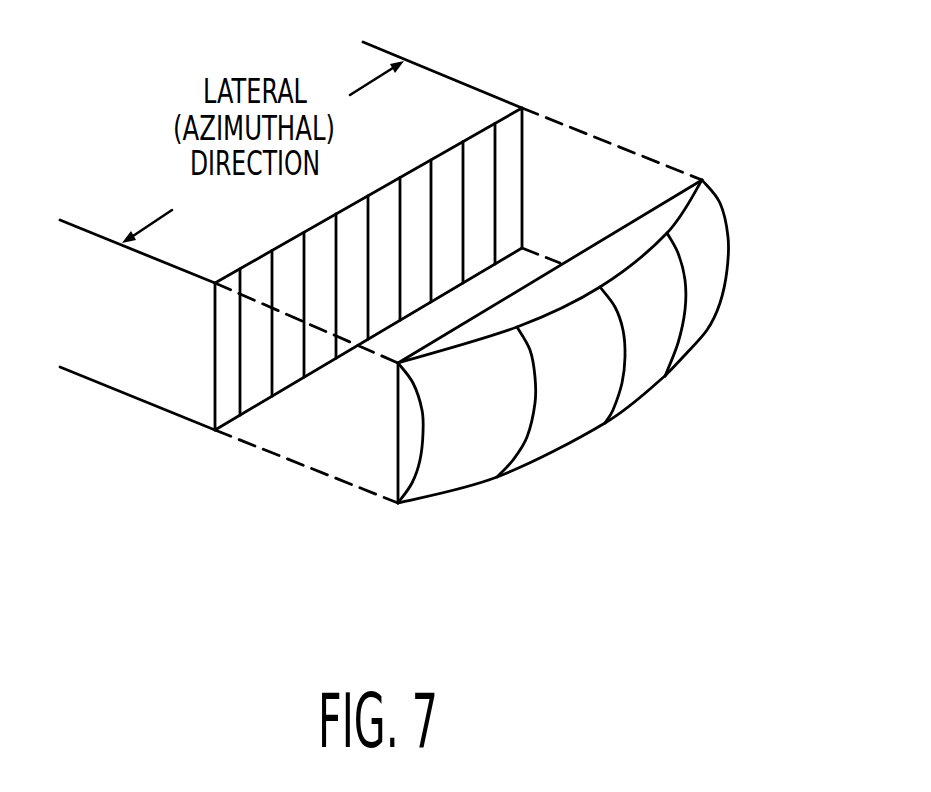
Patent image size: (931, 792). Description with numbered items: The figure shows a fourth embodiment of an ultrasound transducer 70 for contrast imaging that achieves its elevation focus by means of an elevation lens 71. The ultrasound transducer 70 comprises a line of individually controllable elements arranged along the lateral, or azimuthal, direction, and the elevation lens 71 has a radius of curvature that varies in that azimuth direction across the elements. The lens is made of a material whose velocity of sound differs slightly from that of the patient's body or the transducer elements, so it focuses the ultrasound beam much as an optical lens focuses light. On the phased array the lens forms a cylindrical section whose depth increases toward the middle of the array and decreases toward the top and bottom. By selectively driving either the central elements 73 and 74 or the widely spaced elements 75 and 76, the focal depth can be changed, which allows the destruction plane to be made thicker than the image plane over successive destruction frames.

The ultrasound transducer 70 is at (205, 348).
The elevation lens 71 is at (412, 452).
The central element 73 is at (577, 420).
The central element 74 is at (643, 375).
The widely spaced element 75 is at (487, 457).
The widely spaced element 76 is at (710, 275).